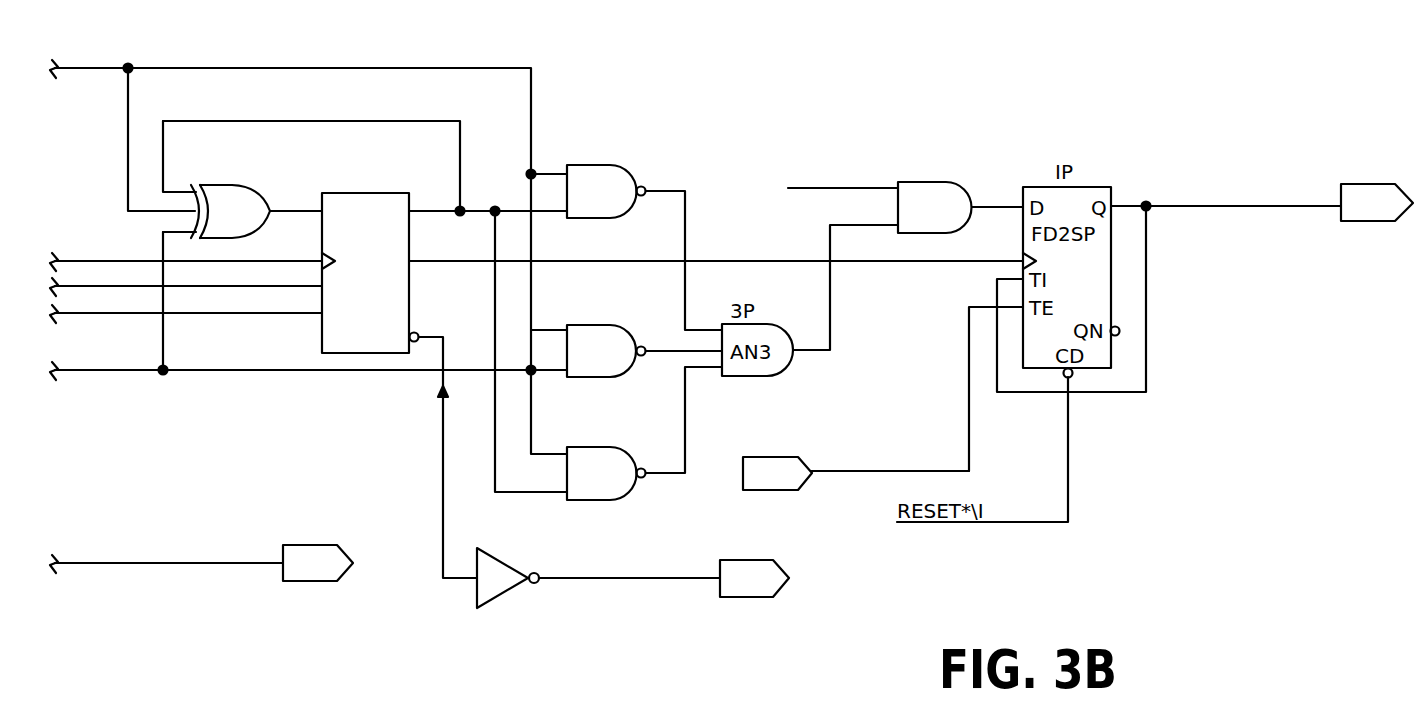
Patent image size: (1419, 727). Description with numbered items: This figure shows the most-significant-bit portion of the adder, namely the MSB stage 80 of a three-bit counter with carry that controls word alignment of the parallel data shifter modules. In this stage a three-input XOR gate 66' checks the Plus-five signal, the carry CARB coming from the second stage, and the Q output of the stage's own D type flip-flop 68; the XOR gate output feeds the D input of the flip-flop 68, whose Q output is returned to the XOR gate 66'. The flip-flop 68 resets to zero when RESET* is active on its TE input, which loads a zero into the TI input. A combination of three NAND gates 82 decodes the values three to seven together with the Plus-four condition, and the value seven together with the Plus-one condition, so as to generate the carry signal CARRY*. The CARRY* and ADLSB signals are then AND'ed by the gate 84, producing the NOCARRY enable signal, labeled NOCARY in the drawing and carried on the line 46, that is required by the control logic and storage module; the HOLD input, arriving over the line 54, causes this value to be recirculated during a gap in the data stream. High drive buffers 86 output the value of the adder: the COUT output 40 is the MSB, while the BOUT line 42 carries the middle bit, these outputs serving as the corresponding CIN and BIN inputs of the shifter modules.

The 3-input XOR gate 66' is at (242, 179).
The D type flip-flop 68 is at (393, 193).
The NAND gates 82 is at (625, 167).
The AND gate 84 is at (957, 183).
The MSB stage 80 is at (330, 380).
The NOCARY output line 46 is at (1306, 208).
The BOUT output line 42 is at (258, 566).
The high drive buffers 86 is at (506, 566).
The COUT output 40 is at (683, 580).
The HOLD input line 54 is at (829, 475).